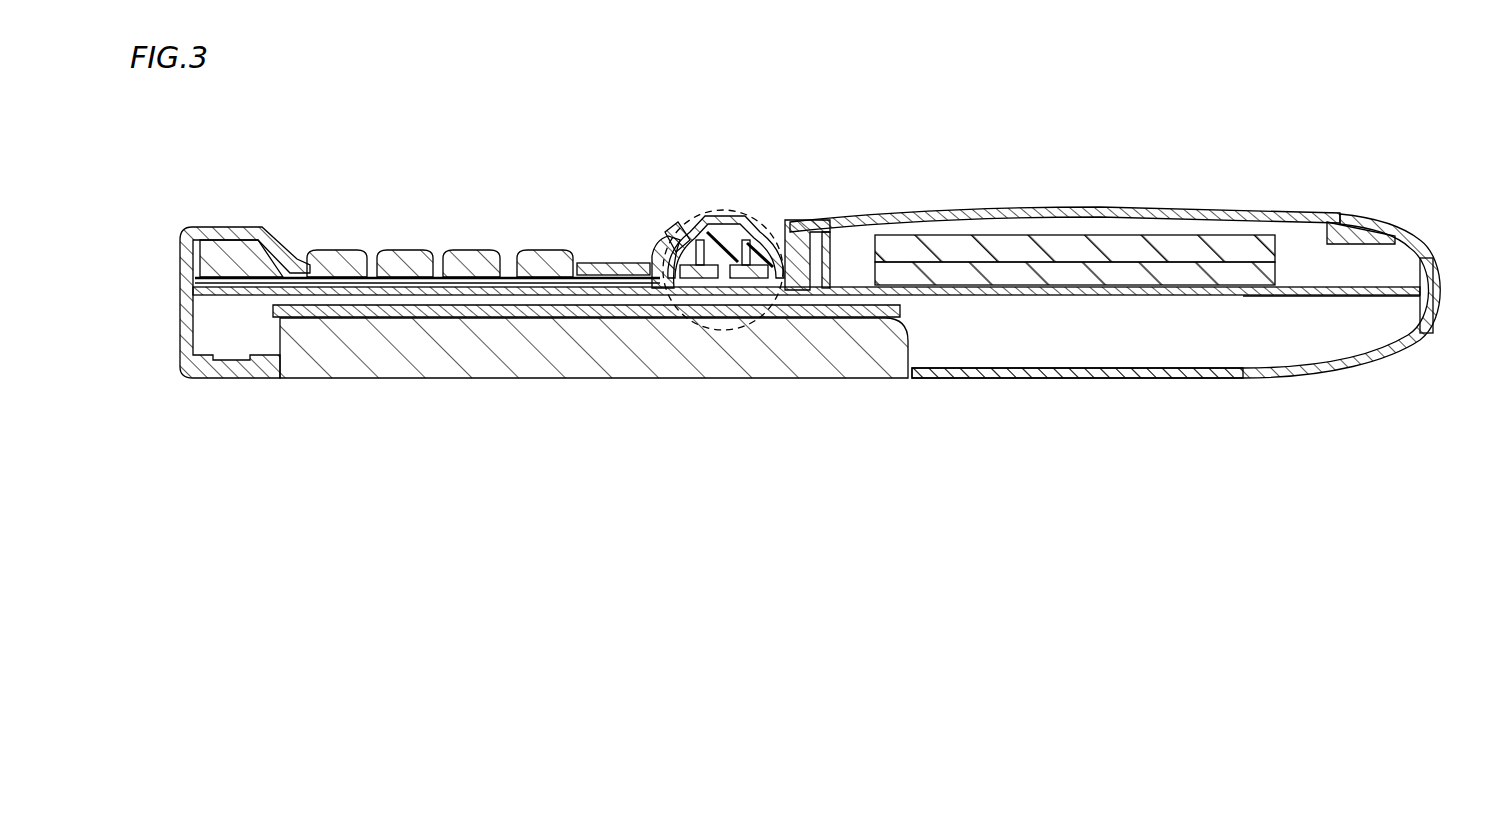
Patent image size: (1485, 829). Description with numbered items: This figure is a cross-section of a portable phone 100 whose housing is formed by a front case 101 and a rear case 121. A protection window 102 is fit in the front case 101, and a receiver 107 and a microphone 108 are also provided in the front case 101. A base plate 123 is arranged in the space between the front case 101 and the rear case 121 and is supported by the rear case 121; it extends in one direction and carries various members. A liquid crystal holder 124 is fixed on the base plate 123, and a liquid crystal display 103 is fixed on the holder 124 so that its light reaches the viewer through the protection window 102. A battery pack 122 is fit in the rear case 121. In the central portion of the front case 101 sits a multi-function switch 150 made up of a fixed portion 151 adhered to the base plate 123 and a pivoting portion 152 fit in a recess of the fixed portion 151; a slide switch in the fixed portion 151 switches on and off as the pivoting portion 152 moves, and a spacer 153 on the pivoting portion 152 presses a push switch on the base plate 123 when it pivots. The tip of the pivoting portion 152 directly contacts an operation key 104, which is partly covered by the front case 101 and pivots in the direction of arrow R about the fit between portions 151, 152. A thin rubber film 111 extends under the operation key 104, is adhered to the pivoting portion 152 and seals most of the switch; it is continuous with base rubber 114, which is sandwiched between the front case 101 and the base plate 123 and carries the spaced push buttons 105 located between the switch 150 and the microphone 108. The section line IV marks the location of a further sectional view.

The portable phone 100 is at (1264, 143).
The front case 101 is at (207, 228).
The protection window 102 is at (980, 222).
The liquid crystal display 103 is at (1078, 235).
The operation key 104 is at (727, 214).
The push buttons 105 is at (480, 256).
The receiver 107 is at (1357, 222).
The microphone 108 is at (262, 238).
The rubber film 111 is at (789, 296).
The base rubber 114 is at (403, 256).
The rear case 121 is at (1247, 372).
The battery pack 122 is at (496, 345).
The base plate 123 is at (1314, 297).
The liquid crystal holder 124 is at (1160, 275).
The multi-function switch 150 is at (650, 436).
The fixed portion 151 is at (703, 272).
The pivoting portion 152 is at (726, 275).
The spacer 153 is at (690, 240).
The section line IV is at (815, 295).
The arrow R is at (662, 132).